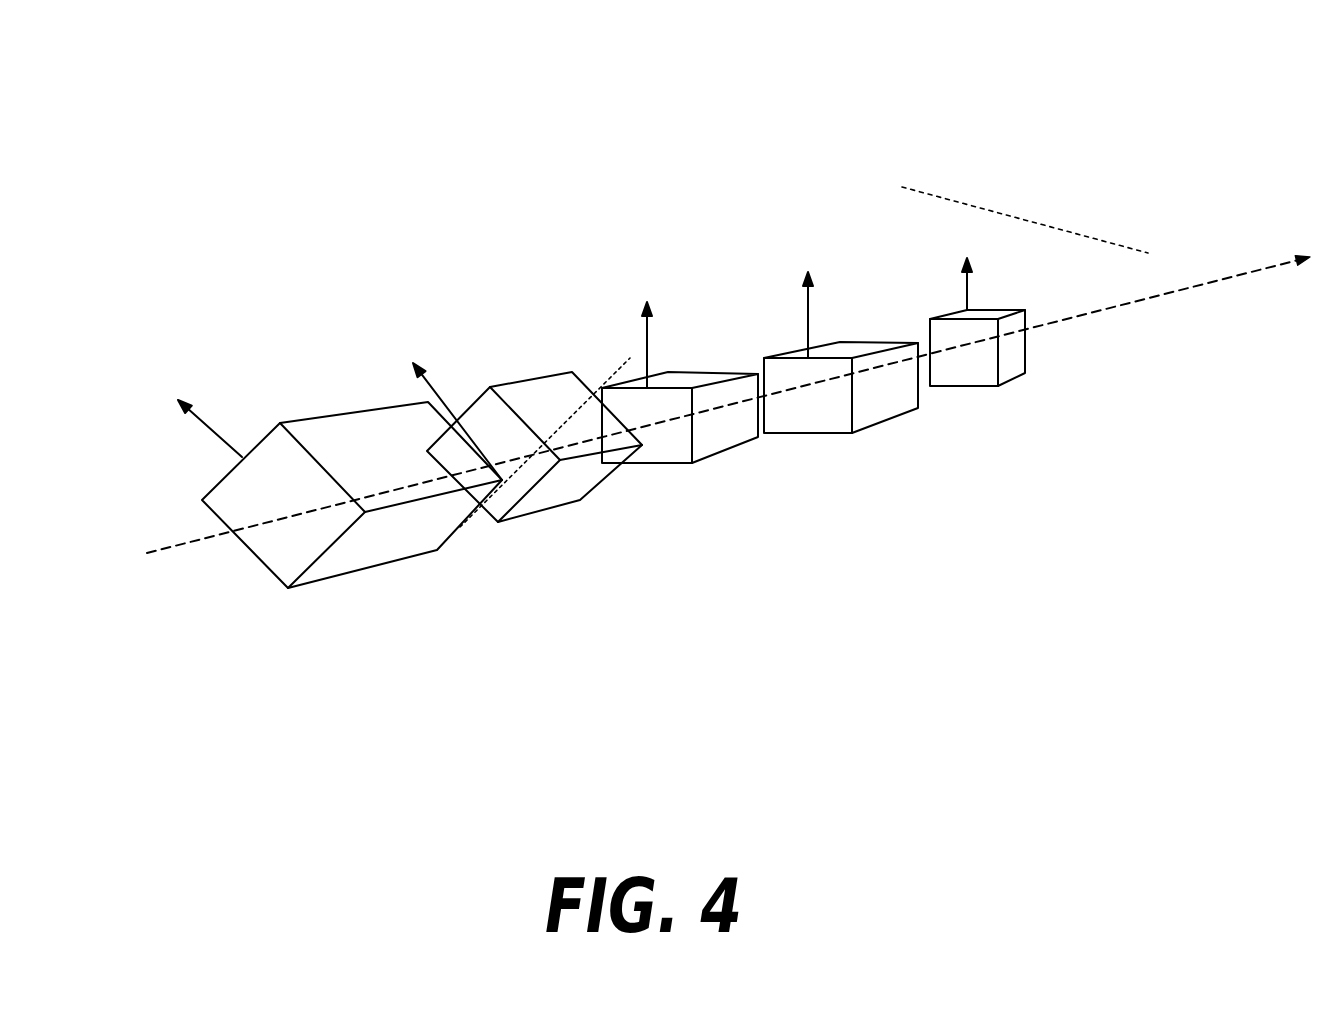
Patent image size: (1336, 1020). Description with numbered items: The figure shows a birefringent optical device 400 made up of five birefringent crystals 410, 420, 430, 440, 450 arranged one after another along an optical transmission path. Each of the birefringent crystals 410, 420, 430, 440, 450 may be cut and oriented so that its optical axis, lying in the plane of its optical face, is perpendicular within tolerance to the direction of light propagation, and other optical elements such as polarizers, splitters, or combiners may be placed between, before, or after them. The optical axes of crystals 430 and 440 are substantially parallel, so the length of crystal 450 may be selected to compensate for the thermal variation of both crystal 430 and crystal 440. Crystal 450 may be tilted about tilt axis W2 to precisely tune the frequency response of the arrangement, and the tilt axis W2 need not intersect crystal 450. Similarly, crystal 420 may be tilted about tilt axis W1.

The optical device 400 is at (170, 91).
The birefringent crystal 410 is at (367, 555).
The birefringent crystal 420 is at (513, 517).
The birefringent crystal 430 is at (662, 452).
The birefringent crystal 440 is at (888, 423).
The birefringent crystal 450 is at (1018, 378).
The tilt axis W1 is at (545, 424).
The tilt axis W2 is at (999, 209).